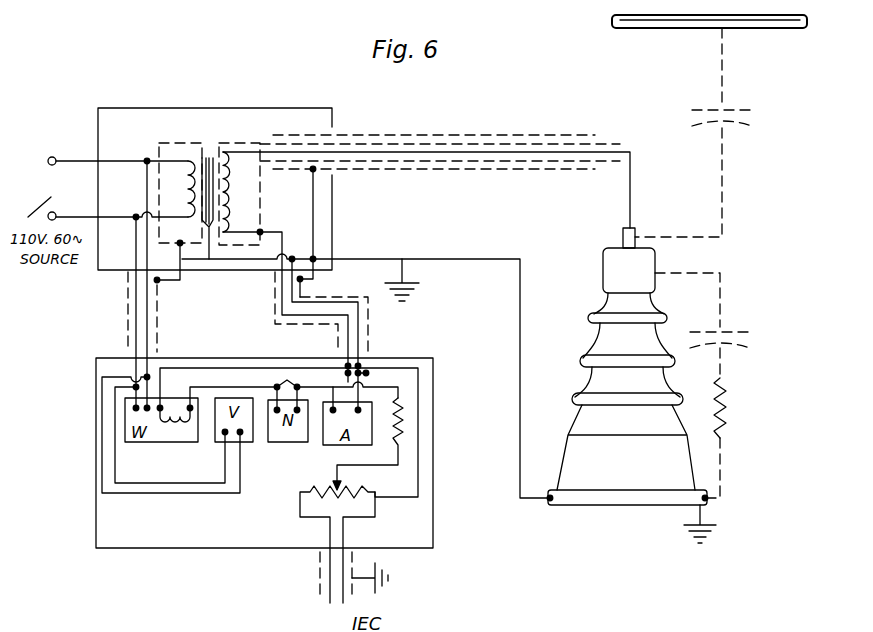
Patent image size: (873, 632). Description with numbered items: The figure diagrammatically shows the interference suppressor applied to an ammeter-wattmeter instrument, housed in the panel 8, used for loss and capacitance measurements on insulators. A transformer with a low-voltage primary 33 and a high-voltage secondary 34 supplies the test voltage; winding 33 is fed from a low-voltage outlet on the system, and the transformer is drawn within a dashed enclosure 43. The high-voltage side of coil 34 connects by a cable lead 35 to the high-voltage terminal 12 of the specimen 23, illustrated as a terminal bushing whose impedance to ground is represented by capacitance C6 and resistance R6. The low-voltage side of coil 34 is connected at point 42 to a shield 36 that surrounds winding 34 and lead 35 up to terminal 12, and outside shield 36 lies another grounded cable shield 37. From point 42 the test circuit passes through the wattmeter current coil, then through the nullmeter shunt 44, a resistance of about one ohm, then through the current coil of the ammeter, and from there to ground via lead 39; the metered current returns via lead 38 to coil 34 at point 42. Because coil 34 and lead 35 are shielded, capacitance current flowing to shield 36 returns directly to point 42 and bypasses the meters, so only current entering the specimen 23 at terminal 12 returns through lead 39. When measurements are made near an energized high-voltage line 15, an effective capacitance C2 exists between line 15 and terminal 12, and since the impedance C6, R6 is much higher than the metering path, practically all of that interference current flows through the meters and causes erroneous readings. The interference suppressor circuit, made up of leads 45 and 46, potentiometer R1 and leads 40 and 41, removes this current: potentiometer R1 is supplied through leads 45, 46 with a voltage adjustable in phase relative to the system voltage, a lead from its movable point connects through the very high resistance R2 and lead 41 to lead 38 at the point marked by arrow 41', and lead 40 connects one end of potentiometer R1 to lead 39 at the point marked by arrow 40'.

The instrument panel 8 is at (290, 443).
The high-voltage terminal 12 is at (636, 232).
The energized high-voltage line 15 is at (643, 21).
The specimen 23 is at (598, 385).
The low-voltage primary 33 is at (194, 170).
The high-voltage secondary 34 is at (229, 170).
The cable lead 35 is at (383, 151).
The shield 36 is at (418, 144).
The grounded cable shield 37 is at (399, 169).
The lead 38 is at (343, 333).
The lead 39 is at (356, 252).
The lead 40 is at (296, 417).
The arrow 40' is at (397, 345).
The lead 41 is at (434, 381).
The arrow 41' is at (337, 367).
The point 42 is at (262, 232).
The transformer shield 43 is at (189, 134).
The nullmeter shunt 44 is at (282, 383).
The lead 45 is at (328, 557).
The lead 46 is at (342, 577).
The effective capacitance C2 is at (738, 118).
The specimen capacitance C6 is at (735, 342).
The specimen resistance R6 is at (727, 400).
The potentiometer R1 is at (323, 488).
The resistance R2 is at (368, 444).